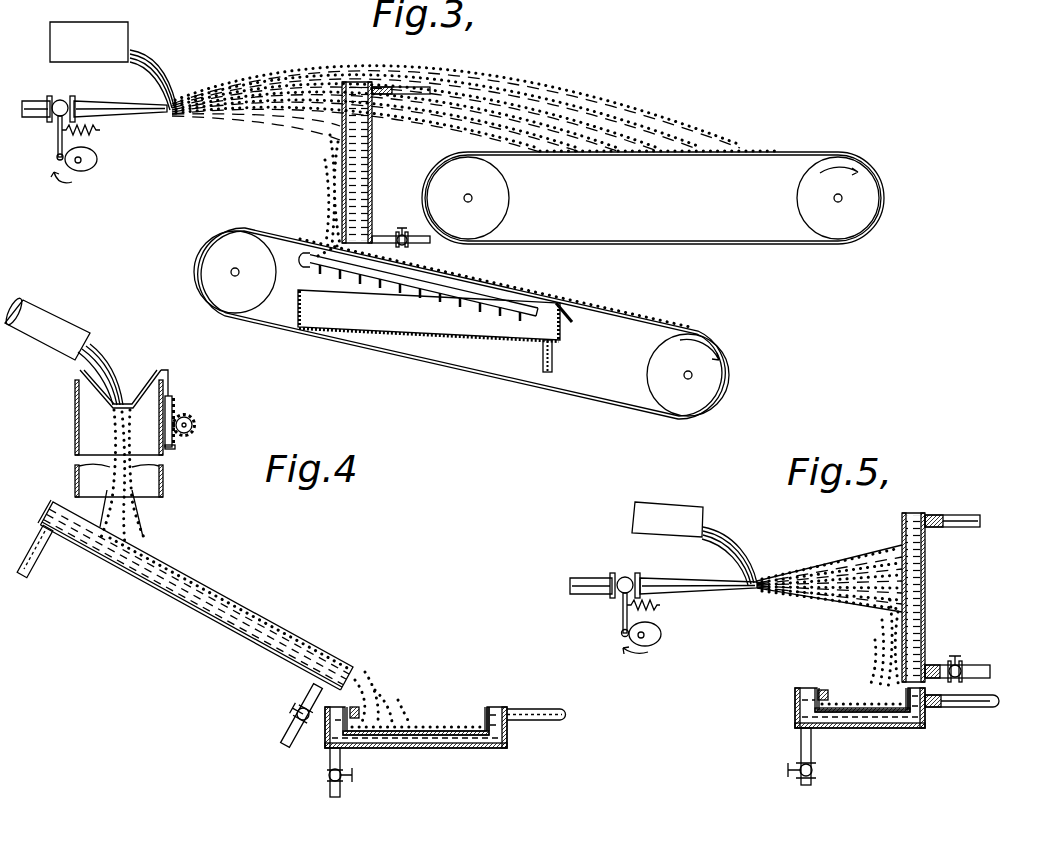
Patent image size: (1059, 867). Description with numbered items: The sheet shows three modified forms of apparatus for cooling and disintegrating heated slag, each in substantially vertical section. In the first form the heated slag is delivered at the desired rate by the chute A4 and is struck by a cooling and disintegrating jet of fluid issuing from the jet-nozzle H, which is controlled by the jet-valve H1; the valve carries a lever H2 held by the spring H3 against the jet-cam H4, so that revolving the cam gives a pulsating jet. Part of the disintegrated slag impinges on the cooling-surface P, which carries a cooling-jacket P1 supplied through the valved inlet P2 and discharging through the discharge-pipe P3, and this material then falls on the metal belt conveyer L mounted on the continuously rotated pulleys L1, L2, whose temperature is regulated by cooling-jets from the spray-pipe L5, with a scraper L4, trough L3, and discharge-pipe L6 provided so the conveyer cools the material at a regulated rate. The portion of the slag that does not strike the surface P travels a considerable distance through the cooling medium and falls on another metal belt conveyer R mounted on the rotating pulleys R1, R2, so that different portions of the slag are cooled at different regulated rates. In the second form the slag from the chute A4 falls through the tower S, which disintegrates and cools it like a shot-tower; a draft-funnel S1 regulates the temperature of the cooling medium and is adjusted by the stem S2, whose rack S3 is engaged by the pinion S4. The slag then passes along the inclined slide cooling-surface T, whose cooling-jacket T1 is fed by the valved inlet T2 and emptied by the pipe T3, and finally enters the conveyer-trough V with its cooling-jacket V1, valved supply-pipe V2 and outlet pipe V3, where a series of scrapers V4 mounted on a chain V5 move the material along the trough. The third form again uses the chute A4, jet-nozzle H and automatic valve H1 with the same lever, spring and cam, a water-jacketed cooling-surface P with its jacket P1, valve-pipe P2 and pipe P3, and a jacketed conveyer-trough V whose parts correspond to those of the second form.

In FIG. 3, the slag-chute A4 is at (128, 35).
In FIG. 4, the slag-chute A4 is at (80, 327).
In FIG. 5, the slag-chute A4 is at (703, 525).
In FIG. 3, the jet-nozzle H is at (152, 110).
In FIG. 5, the jet-nozzle H is at (700, 581).
In FIG. 3, the jet-valve H1 is at (48, 119).
In FIG. 5, the jet-valve H1 is at (620, 578).
In FIG. 3, the lever H2 is at (55, 160).
In FIG. 5, the lever H2 is at (622, 618).
In FIG. 3, the spring H3 is at (97, 132).
In FIG. 5, the spring H3 is at (662, 606).
In FIG. 3, the jet-cam H4 is at (90, 170).
In FIG. 5, the jet-cam H4 is at (660, 637).
In FIG. 3, the cooling-surface P is at (342, 122).
In FIG. 5, the cooling-surface P is at (902, 552).
In FIG. 3, the cooling-jacket P1 is at (373, 123).
In FIG. 5, the cooling-jacket P1 is at (917, 568).
In FIG. 3, the valved inlet P2 is at (378, 236).
In FIG. 5, the valved inlet P2 is at (973, 666).
In FIG. 3, the discharge-pipe P3 is at (415, 96).
In FIG. 5, the discharge-pipe P3 is at (966, 528).
In FIG. 3, the belt conveyer R is at (570, 157).
In FIG. 3, the rotating pulley R1 is at (476, 232).
In FIG. 3, the rotating pulley R2 is at (837, 226).
In FIG. 3, the belt conveyer L is at (557, 302).
In FIG. 3, the pulley L1 is at (228, 305).
In FIG. 3, the pulley L2 is at (690, 405).
In FIG. 3, the trough L3 is at (506, 340).
In FIG. 3, the scraper L4 is at (570, 311).
In FIG. 3, the spray-pipe L5 is at (467, 301).
In FIG. 3, the discharge-pipe L6 is at (552, 362).
In FIG. 4, the tower S is at (75, 433).
In FIG. 4, the draft-funnel S1 is at (150, 370).
In FIG. 4, the stem S2 is at (173, 400).
In FIG. 4, the rack S3 is at (175, 446).
In FIG. 4, the pinion S4 is at (195, 426).
In FIG. 4, the cooling-surface T is at (242, 601).
In FIG. 4, the cooling-jacket T1 is at (240, 630).
In FIG. 4, the valved inlet T2 is at (296, 707).
In FIG. 4, the pipe T3 is at (40, 562).
In FIG. 4, the trough V is at (457, 740).
In FIG. 5, the trough V is at (860, 710).
In FIG. 4, the cooling-jacket V1 is at (497, 747).
In FIG. 5, the cooling-jacket V1 is at (887, 730).
In FIG. 4, the valved supply-pipe V2 is at (330, 763).
In FIG. 5, the valved supply-pipe V2 is at (797, 742).
In FIG. 4, the pipe V3 is at (548, 723).
In FIG. 5, the pipe V3 is at (968, 708).
In FIG. 4, the scraper V4 is at (408, 703).
In FIG. 5, the scraper V4 is at (858, 698).
In FIG. 4, the chain V5 is at (357, 707).
In FIG. 5, the chain V5 is at (822, 688).